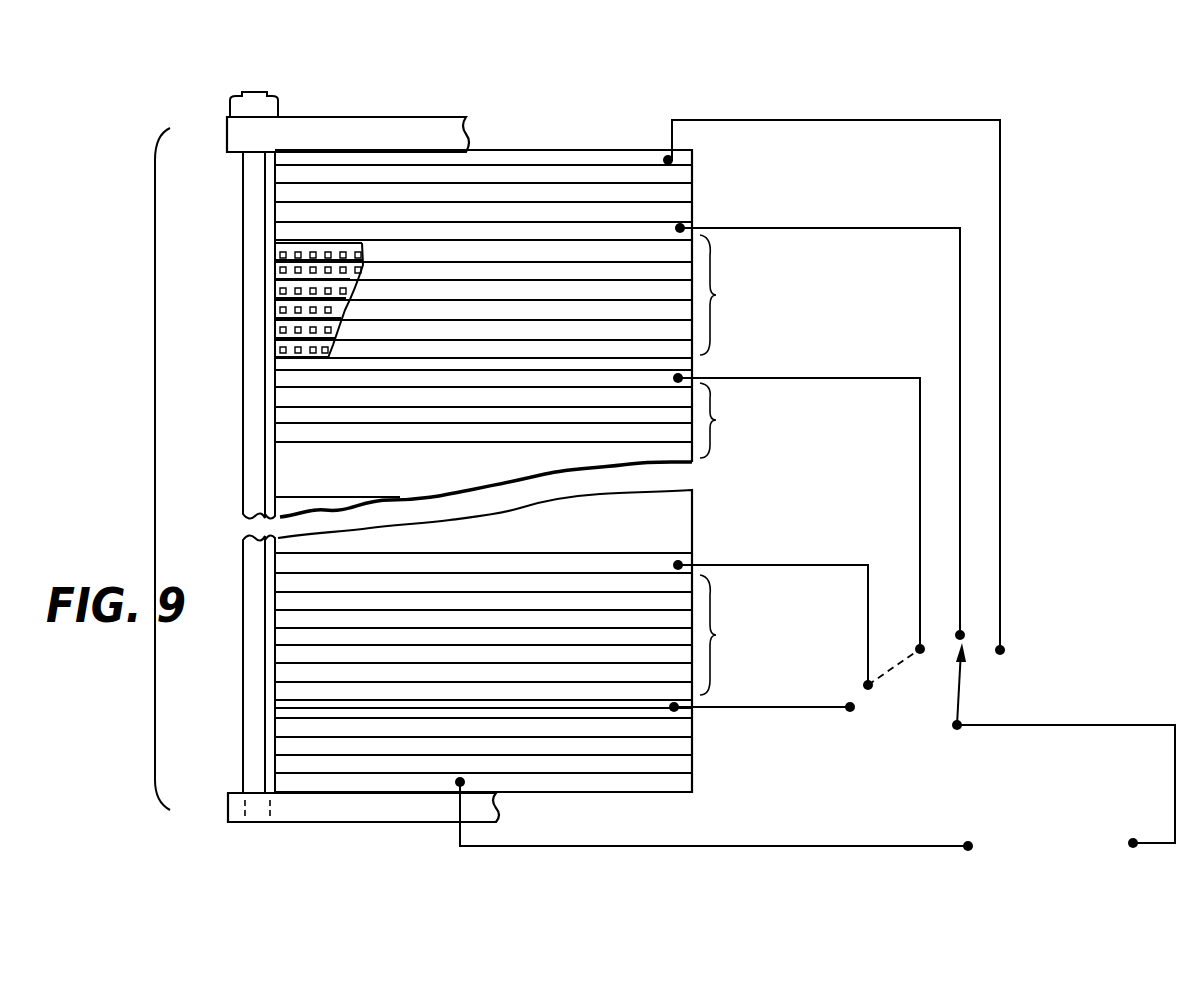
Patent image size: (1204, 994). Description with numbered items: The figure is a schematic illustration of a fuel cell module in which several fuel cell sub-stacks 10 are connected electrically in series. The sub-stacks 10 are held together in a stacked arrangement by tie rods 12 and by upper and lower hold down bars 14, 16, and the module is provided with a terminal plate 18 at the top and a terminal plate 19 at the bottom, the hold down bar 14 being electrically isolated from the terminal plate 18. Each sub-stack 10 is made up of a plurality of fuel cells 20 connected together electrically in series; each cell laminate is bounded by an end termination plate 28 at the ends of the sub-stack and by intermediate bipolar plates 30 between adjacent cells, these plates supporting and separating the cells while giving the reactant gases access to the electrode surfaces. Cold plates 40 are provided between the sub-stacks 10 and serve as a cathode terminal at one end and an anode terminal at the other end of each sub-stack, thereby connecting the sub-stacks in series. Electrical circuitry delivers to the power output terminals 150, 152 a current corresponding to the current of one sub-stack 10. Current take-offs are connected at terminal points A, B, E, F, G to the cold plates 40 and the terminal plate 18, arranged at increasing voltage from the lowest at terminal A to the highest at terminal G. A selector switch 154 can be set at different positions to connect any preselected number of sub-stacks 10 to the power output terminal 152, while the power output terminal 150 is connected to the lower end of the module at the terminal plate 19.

The sub-stack 10 is at (700, 170).
The tie rods 12 is at (250, 184).
The hold down bar 14 is at (466, 122).
The hold down bar 16 is at (375, 818).
The terminal plate 18 is at (572, 153).
The terminal plate 19 is at (582, 784).
The fuel cells 20 is at (276, 295).
The termination plate 28 is at (278, 248).
The bipolar plate 30 is at (347, 305).
The cold plates 40 is at (280, 497).
The power output terminal 150 is at (970, 840).
The power output terminal 152 is at (1138, 840).
The selector switch 154 is at (920, 688).
The terminal point A is at (676, 710).
The terminal point B is at (677, 563).
The terminal point E is at (676, 376).
The terminal point F is at (678, 226).
The terminal point G is at (672, 156).